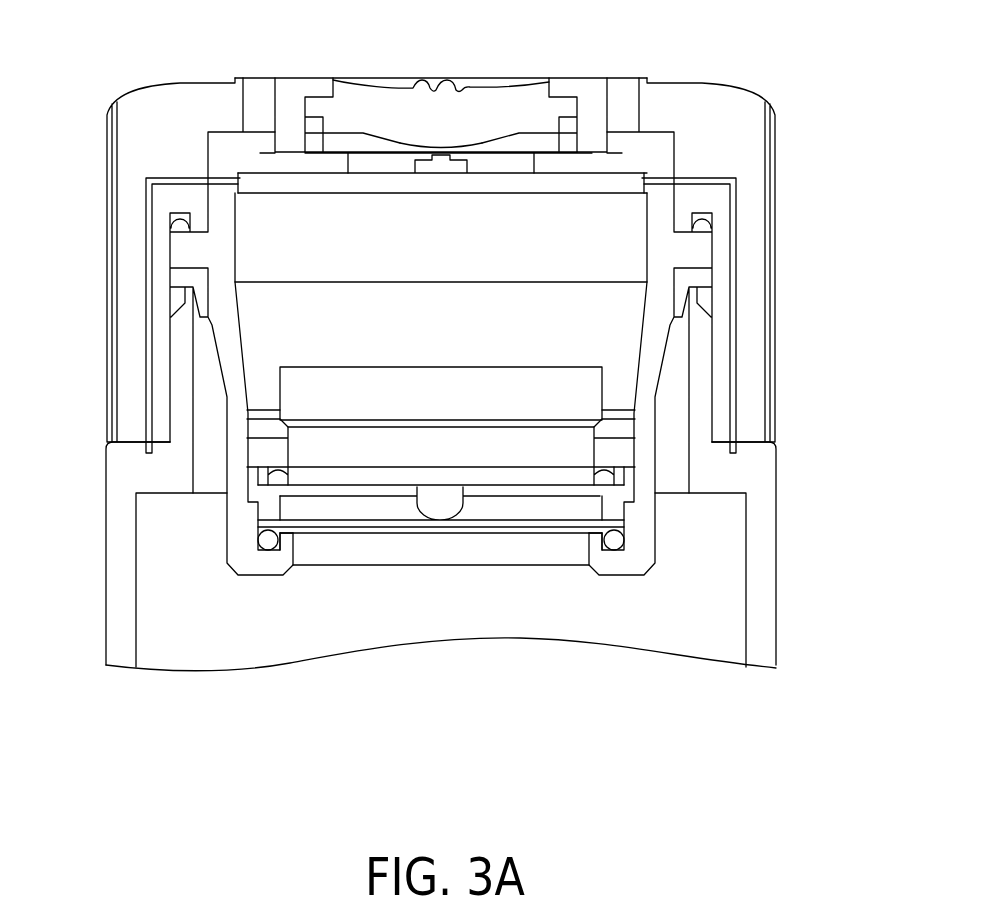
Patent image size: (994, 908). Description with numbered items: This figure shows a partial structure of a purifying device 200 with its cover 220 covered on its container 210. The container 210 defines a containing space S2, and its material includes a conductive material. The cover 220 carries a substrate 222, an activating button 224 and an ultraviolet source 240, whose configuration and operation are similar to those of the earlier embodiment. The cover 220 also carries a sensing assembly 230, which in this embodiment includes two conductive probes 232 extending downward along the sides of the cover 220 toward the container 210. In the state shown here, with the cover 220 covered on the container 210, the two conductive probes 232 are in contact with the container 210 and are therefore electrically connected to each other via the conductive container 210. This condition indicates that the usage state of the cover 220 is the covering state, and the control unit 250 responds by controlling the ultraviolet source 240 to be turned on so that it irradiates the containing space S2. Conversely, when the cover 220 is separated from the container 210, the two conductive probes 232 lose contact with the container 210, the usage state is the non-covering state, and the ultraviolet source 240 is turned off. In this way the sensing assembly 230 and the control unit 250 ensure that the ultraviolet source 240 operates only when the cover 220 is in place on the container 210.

The purifying device 200 is at (851, 752).
The container 210 is at (122, 590).
The cover 220 is at (134, 212).
The substrate 222 is at (565, 477).
The activating button 224 is at (508, 108).
The sensing assembly 230 is at (853, 190).
The conductive probe 232 is at (734, 212).
The ultraviolet source 240 is at (440, 503).
The control unit 250 is at (293, 182).
The containing space S2 is at (271, 635).